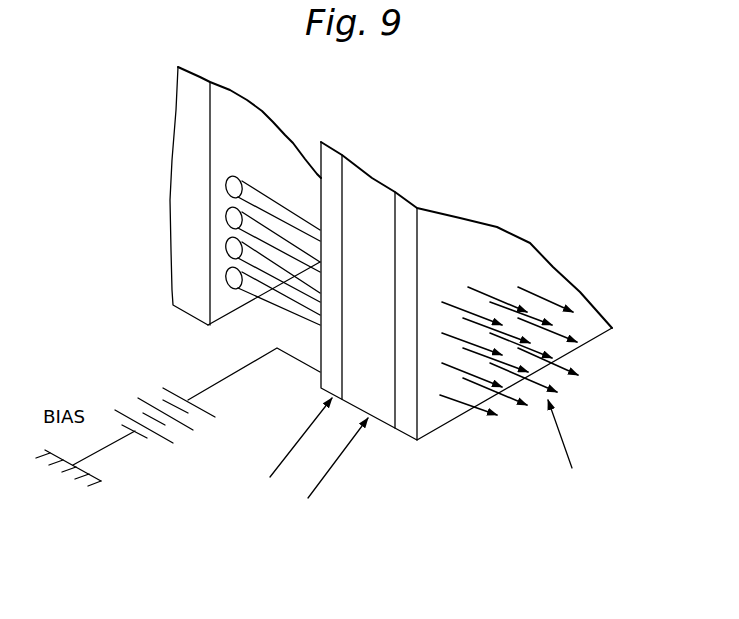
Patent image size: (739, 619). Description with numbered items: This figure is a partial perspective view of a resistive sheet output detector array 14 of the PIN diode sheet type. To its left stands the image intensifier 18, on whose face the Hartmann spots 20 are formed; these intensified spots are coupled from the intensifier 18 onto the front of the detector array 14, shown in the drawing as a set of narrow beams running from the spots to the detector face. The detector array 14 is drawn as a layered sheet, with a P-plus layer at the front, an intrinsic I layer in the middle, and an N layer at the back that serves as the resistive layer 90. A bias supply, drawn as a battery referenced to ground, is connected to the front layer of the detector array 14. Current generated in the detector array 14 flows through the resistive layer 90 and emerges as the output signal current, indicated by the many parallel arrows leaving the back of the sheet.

The intensifier 18 is at (188, 184).
The Hartmann spots 20 is at (266, 198).
The detector array 14 is at (436, 360).
The resistive layer 90 is at (405, 437).